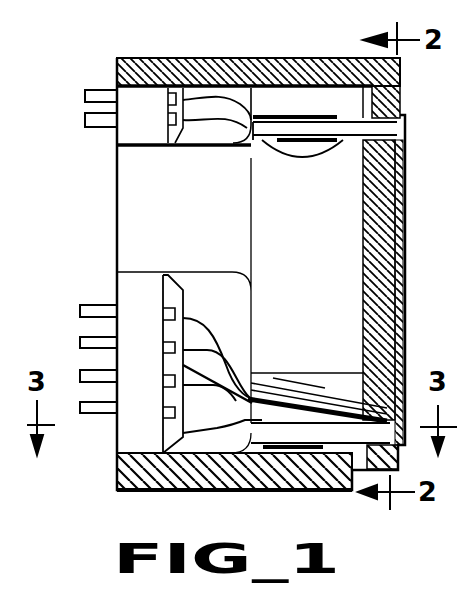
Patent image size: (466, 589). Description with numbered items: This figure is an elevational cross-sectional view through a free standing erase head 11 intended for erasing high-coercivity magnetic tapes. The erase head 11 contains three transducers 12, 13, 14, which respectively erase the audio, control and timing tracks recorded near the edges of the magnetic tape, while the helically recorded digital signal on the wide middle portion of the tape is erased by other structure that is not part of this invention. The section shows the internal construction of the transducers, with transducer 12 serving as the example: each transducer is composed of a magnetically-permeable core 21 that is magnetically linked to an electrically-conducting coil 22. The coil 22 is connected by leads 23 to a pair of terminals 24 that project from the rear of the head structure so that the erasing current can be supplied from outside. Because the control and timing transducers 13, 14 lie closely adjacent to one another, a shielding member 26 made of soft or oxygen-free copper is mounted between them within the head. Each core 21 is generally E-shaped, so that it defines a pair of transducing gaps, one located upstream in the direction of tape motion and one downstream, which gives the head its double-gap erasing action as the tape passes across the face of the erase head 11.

The erase head 11 is at (114, 58).
The transducer 12 is at (351, 119).
The transducer 13 is at (345, 393).
The transducer 14 is at (345, 450).
The magnetically-permeable core 21 is at (343, 134).
The electrically-conducting coil 22 is at (316, 112).
The leads 23 is at (222, 98).
The terminals 24 is at (85, 117).
The shielding member 26 is at (163, 362).